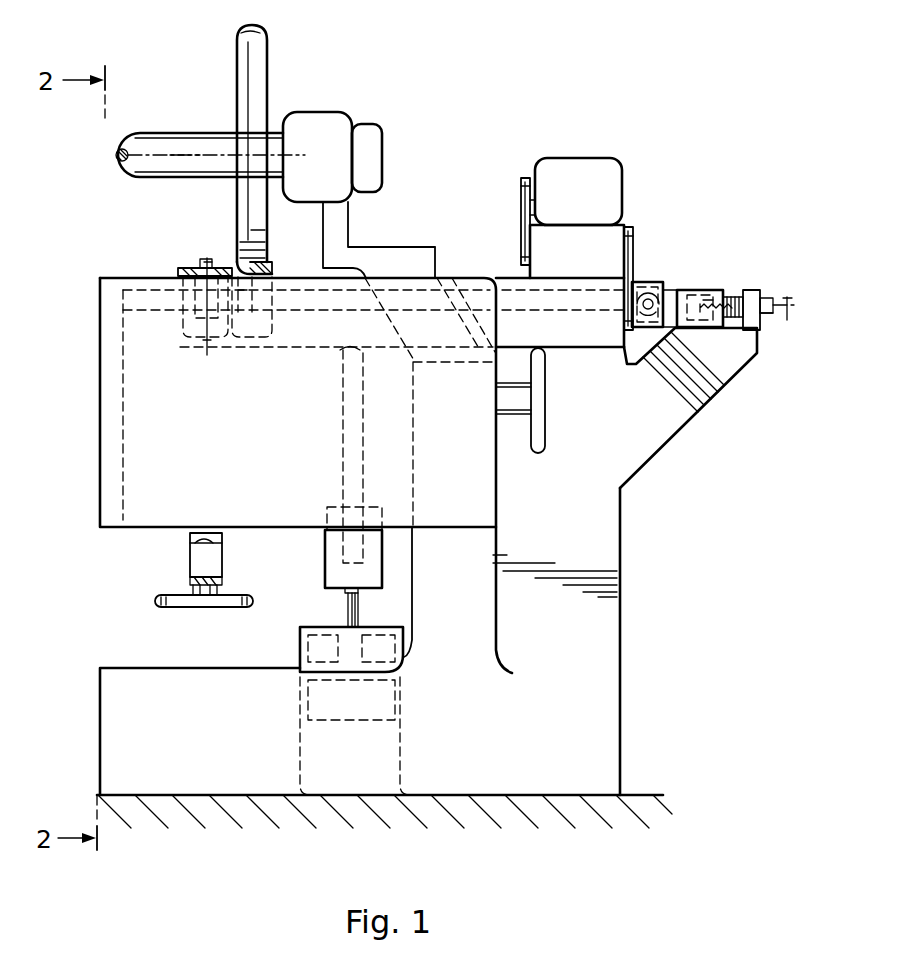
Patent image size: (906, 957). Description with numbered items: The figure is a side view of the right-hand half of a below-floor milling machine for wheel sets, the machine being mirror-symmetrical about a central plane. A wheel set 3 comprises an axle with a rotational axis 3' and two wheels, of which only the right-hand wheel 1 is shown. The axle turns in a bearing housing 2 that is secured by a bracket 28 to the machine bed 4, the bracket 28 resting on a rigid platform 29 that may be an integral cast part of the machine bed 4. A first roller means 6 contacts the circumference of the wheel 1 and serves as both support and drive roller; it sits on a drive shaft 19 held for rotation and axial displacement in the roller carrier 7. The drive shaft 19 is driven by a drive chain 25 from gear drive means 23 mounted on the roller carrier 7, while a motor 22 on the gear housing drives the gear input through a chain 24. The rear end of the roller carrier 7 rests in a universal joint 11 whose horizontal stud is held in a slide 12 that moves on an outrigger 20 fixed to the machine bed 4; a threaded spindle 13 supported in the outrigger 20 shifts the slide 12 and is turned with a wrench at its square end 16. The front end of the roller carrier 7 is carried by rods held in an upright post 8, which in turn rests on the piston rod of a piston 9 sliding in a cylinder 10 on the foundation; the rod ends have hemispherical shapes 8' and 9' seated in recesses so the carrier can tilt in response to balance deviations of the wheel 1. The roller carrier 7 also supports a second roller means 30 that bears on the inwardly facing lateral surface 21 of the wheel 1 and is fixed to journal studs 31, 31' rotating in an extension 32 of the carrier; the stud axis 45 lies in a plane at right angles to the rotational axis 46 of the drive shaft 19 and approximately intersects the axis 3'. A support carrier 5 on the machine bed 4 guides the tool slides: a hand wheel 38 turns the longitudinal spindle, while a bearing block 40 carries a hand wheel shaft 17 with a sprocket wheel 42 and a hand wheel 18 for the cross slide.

The wheel 1 is at (243, 66).
The bearing housing 2 is at (308, 132).
The wheel set 3 is at (210, 119).
The rotational axis 3' is at (186, 191).
The machine bed 4 is at (575, 538).
The support carrier 5 is at (147, 442).
The first roller means 6 is at (265, 268).
The roller carrier 7 is at (463, 287).
The upright post 8 is at (328, 538).
The hemispherical shape 8' is at (337, 455).
The piston 9 is at (331, 649).
The hemispherical shape 9' is at (323, 607).
The cylinder 10 is at (328, 700).
The universal joint 11 is at (653, 293).
The slide 12 is at (680, 292).
The threaded spindle 13 is at (733, 300).
The square end 16 is at (766, 326).
The hand wheel shaft 17 is at (205, 538).
The hand wheel 18 is at (160, 600).
The drive shaft 19 is at (415, 303).
The outrigger 20 is at (703, 362).
The lateral surface 21 is at (224, 259).
The motor 22 is at (556, 178).
The gear drive means 23 is at (584, 250).
The chain 24 is at (524, 205).
The drive chain 25 is at (632, 233).
The bracket 28 is at (337, 213).
The rigid platform 29 is at (381, 234).
The second roller means 30 is at (181, 268).
The journal stud 31 is at (167, 298).
The journal stud 31' is at (145, 294).
The extension 32 is at (170, 330).
The hand wheel 38 is at (540, 410).
The bearing block 40 is at (198, 555).
The sprocket wheel 42 is at (190, 580).
The rotational axis 45 is at (212, 347).
The rotational axis 46 is at (786, 321).